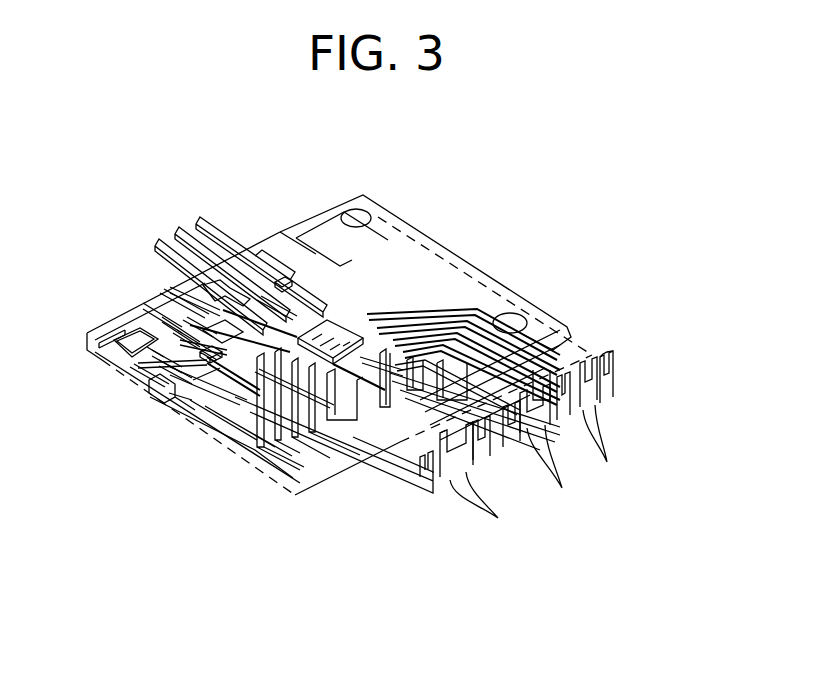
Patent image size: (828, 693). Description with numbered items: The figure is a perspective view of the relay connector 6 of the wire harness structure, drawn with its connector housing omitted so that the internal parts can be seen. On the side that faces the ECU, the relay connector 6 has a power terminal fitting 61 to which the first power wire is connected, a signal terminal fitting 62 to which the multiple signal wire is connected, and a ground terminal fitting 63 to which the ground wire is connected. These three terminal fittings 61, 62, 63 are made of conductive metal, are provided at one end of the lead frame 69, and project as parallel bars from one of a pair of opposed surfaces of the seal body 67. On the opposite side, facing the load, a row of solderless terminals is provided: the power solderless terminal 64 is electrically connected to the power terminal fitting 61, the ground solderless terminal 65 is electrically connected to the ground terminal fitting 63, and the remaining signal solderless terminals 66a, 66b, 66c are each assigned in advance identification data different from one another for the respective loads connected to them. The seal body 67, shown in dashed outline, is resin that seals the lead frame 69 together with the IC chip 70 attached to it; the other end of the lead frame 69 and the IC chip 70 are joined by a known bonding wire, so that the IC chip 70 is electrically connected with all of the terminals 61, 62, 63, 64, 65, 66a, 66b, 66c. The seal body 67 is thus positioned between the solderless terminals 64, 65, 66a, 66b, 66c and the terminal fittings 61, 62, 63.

The relay connector 6 is at (501, 178).
The power terminal fitting 61 is at (215, 228).
The signal terminal fitting 62 is at (195, 237).
The ground terminal fitting 63 is at (172, 247).
The power solderless terminal 64 is at (567, 362).
The ground solderless terminal 65 is at (393, 478).
The signal solderless terminal 66a is at (615, 420).
The signal solderless terminal 66b is at (561, 445).
The signal solderless terminal 66c is at (491, 480).
The seal body 67 is at (403, 270).
The lead frame 69 is at (400, 313).
The IC chip 70 is at (340, 332).